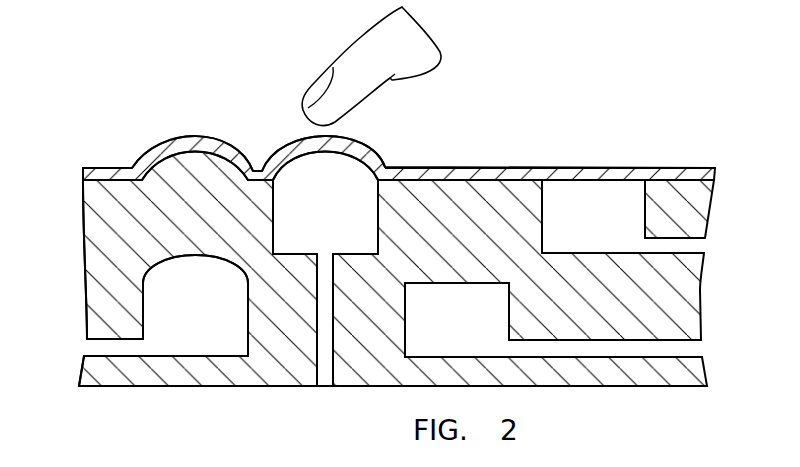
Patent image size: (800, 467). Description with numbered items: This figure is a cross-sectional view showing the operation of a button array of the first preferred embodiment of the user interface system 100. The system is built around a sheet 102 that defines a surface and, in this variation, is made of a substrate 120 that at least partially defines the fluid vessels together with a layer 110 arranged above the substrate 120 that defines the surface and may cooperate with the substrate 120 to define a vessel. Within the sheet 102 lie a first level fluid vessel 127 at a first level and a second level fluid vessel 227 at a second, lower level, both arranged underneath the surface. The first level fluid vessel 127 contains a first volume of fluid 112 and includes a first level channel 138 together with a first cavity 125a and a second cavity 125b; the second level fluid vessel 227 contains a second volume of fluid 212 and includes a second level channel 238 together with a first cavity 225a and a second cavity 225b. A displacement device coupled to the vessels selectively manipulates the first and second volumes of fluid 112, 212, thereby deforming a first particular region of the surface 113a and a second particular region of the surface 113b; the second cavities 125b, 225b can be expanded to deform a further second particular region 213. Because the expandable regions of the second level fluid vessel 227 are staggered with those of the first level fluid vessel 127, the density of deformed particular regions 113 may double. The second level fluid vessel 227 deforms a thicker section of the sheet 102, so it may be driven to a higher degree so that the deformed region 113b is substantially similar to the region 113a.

The user interface system 100 is at (136, 76).
The sheet 102 is at (63, 168).
The layer 110 is at (668, 173).
The first volume of fluid 112 is at (305, 188).
The particular region 113 is at (604, 165).
The first particular region of the surface 113a is at (367, 137).
The second particular region of the surface 113b is at (172, 128).
The substrate 120 is at (670, 307).
The first cavity 125a is at (325, 217).
The second cavity 125b is at (623, 216).
The first level fluid vessel 127 is at (312, 238).
The first level channel 138 is at (692, 246).
The second volume of fluid 212 is at (197, 340).
The second particular region 213 is at (481, 163).
The first cavity 225a is at (195, 305).
The second cavity 225b is at (553, 320).
The second level fluid vessel 227 is at (163, 338).
The second level channel 238 is at (690, 347).